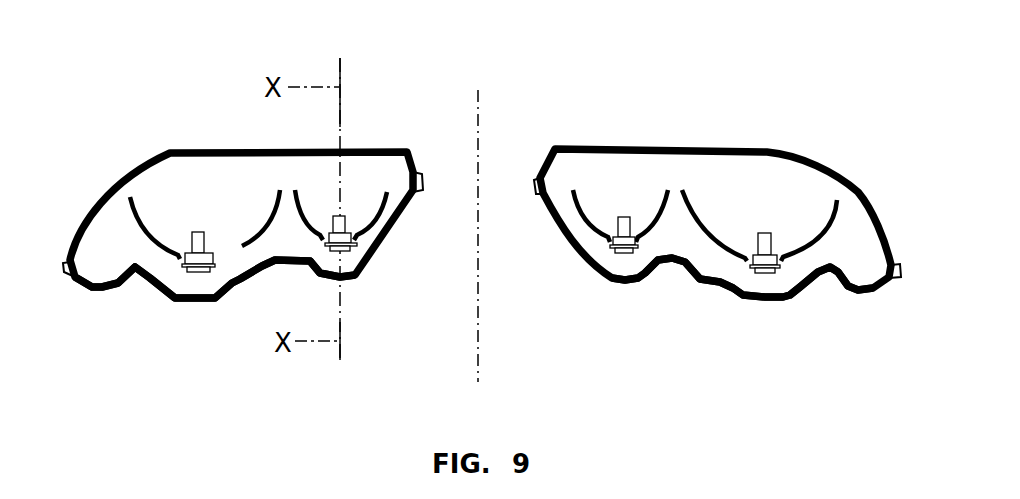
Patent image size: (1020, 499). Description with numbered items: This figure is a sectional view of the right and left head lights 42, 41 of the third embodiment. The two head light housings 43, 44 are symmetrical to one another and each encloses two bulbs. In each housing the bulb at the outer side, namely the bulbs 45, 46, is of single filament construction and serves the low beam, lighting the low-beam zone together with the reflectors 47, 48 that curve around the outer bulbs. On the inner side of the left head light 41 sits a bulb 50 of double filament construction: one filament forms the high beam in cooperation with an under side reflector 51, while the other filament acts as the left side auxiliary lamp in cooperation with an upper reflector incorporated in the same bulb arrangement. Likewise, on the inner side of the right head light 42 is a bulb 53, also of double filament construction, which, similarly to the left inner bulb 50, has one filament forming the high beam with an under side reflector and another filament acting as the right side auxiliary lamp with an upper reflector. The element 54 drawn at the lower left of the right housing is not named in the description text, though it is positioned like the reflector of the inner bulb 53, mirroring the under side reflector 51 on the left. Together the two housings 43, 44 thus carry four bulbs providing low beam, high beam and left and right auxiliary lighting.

The left head light 41 is at (158, 140).
The right head light 42 is at (752, 115).
The head light housing 43 is at (177, 302).
The head light housing 44 is at (763, 298).
The bulb 45 is at (200, 231).
The bulb 46 is at (770, 232).
The reflector 47 is at (128, 205).
The reflector 48 is at (833, 230).
The bulb 50 is at (343, 215).
The under side reflector 51 is at (384, 210).
The bulb 53 is at (626, 216).
The reflector 54 is at (583, 210).